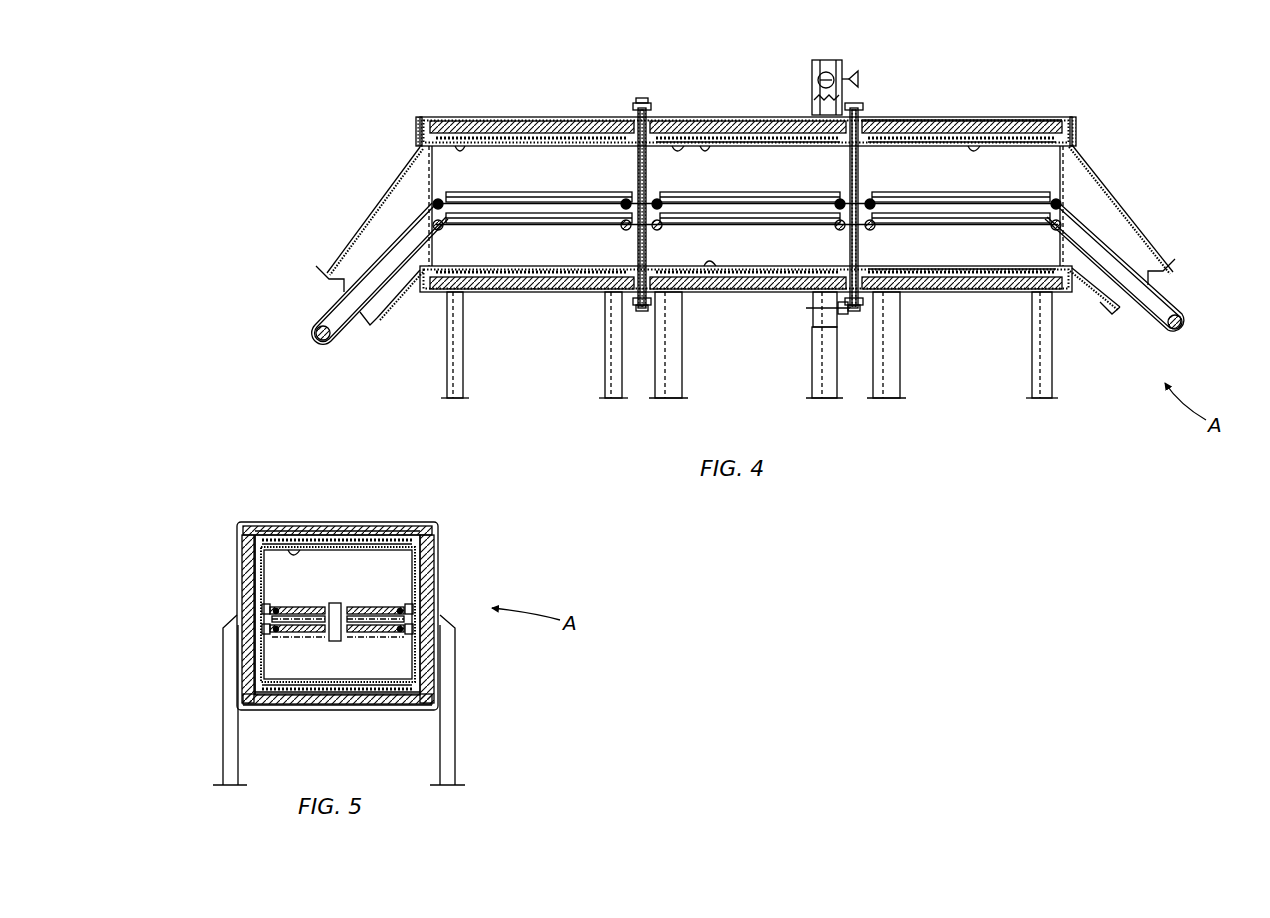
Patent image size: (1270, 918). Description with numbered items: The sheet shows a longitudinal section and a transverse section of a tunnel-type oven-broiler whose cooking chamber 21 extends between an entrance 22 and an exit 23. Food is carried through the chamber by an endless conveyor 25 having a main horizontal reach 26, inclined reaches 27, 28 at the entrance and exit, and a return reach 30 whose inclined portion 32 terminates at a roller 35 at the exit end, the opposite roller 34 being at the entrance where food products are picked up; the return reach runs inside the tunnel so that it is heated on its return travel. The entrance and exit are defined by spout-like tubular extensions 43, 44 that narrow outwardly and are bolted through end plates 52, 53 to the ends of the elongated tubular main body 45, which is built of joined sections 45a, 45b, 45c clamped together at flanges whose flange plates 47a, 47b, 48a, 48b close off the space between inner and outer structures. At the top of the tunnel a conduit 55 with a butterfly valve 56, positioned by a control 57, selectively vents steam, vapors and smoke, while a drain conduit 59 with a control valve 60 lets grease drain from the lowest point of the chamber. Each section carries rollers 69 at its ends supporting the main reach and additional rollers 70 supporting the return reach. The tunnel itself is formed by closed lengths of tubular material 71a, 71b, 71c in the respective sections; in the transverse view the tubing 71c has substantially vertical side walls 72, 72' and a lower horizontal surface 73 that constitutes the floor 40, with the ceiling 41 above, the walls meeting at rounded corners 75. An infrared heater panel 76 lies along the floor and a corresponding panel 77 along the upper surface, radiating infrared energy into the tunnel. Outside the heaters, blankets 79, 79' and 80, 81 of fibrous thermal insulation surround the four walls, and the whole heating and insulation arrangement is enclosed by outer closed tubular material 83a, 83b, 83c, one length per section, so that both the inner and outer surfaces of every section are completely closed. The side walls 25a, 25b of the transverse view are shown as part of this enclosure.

In FIG. 4, the cooking chamber 21 is at (742, 210).
In FIG. 5, the cooking chamber 21 is at (334, 567).
In FIG. 4, the entrance 22 is at (330, 283).
In FIG. 4, the exit 23 is at (1170, 272).
In FIG. 4, the conveyor 25 is at (509, 268).
In FIG. 5, the left side wall 25a is at (268, 590).
In FIG. 5, the top and bottom walls 25b is at (432, 560).
In FIG. 4, the main horizontal reach 26 is at (607, 122).
In FIG. 5, the main horizontal reach 26 is at (303, 606).
In FIG. 4, the inclined reach 27 is at (408, 205).
In FIG. 4, the inclined reach 28 is at (1100, 222).
In FIG. 4, the return reach 30 is at (732, 224).
In FIG. 5, the return reach 30 is at (308, 634).
In FIG. 4, the inclined portion 32 is at (1108, 300).
In FIG. 4, the roller 34 is at (314, 336).
In FIG. 4, the roller 35 is at (1184, 330).
In FIG. 4, the floor 40 is at (716, 270).
In FIG. 5, the floor 40 is at (372, 690).
In FIG. 4, the ceiling 41 is at (728, 128).
In FIG. 5, the ceiling 41 is at (336, 545).
In FIG. 4, the tubular extension 43 is at (372, 220).
In FIG. 4, the tubular extension 44 is at (1117, 192).
In FIG. 4, the main body 45 is at (1060, 107).
In FIG. 4, the body section 45a is at (493, 108).
In FIG. 4, the body section 45b is at (682, 108).
In FIG. 4, the body section 45c is at (905, 108).
In FIG. 5, the body section 45c is at (452, 584).
In FIG. 4, the flange plate 47a is at (638, 106).
In FIG. 4, the flange plate 47b is at (644, 106).
In FIG. 4, the flange plate 48a is at (860, 108).
In FIG. 4, the flange plate 48b is at (860, 100).
In FIG. 4, the end plate 52 is at (417, 131).
In FIG. 4, the end plate 53 is at (1076, 131).
In FIG. 4, the conduit 55 is at (812, 97).
In FIG. 4, the butterfly valve 56 is at (812, 64).
In FIG. 4, the control 57 is at (856, 70).
In FIG. 4, the drain conduit 59 is at (812, 308).
In FIG. 4, the control valve 60 is at (843, 314).
In FIG. 4, the rollers 69 is at (442, 200).
In FIG. 5, the rollers 69 is at (279, 606).
In FIG. 4, the rollers 70 is at (441, 230).
In FIG. 5, the rollers 70 is at (279, 634).
In FIG. 4, the tubular material 71a is at (452, 117).
In FIG. 5, the tubular material 71a is at (295, 556).
In FIG. 4, the tubular material 71b is at (700, 122).
In FIG. 4, the tubular material 71c is at (980, 130).
In FIG. 5, the tubular material 71c is at (398, 692).
In FIG. 5, the side wall 72 is at (458, 639).
In FIG. 5, the side wall 72' is at (210, 640).
In FIG. 5, the horizontal surface 73 is at (298, 692).
In FIG. 5, the rounded corner 75 is at (440, 530).
In FIG. 4, the infrared heater panel 76 is at (960, 284).
In FIG. 5, the infrared heater panel 76 is at (316, 700).
In FIG. 4, the infrared heater panel 77 is at (1043, 124).
In FIG. 5, the infrared heater panel 77 is at (358, 530).
In FIG. 5, the insulation blanket 79 is at (452, 619).
In FIG. 5, the insulation blanket 79' is at (205, 615).
In FIG. 4, the insulation blanket 80 is at (918, 292).
In FIG. 5, the insulation blanket 80 is at (266, 706).
In FIG. 4, the insulation blanket 81 is at (918, 118).
In FIG. 5, the insulation blanket 81 is at (312, 527).
In FIG. 4, the outer tubular material 83a is at (518, 292).
In FIG. 4, the outer tubular material 83b is at (692, 292).
In FIG. 4, the outer tubular material 83c is at (905, 292).